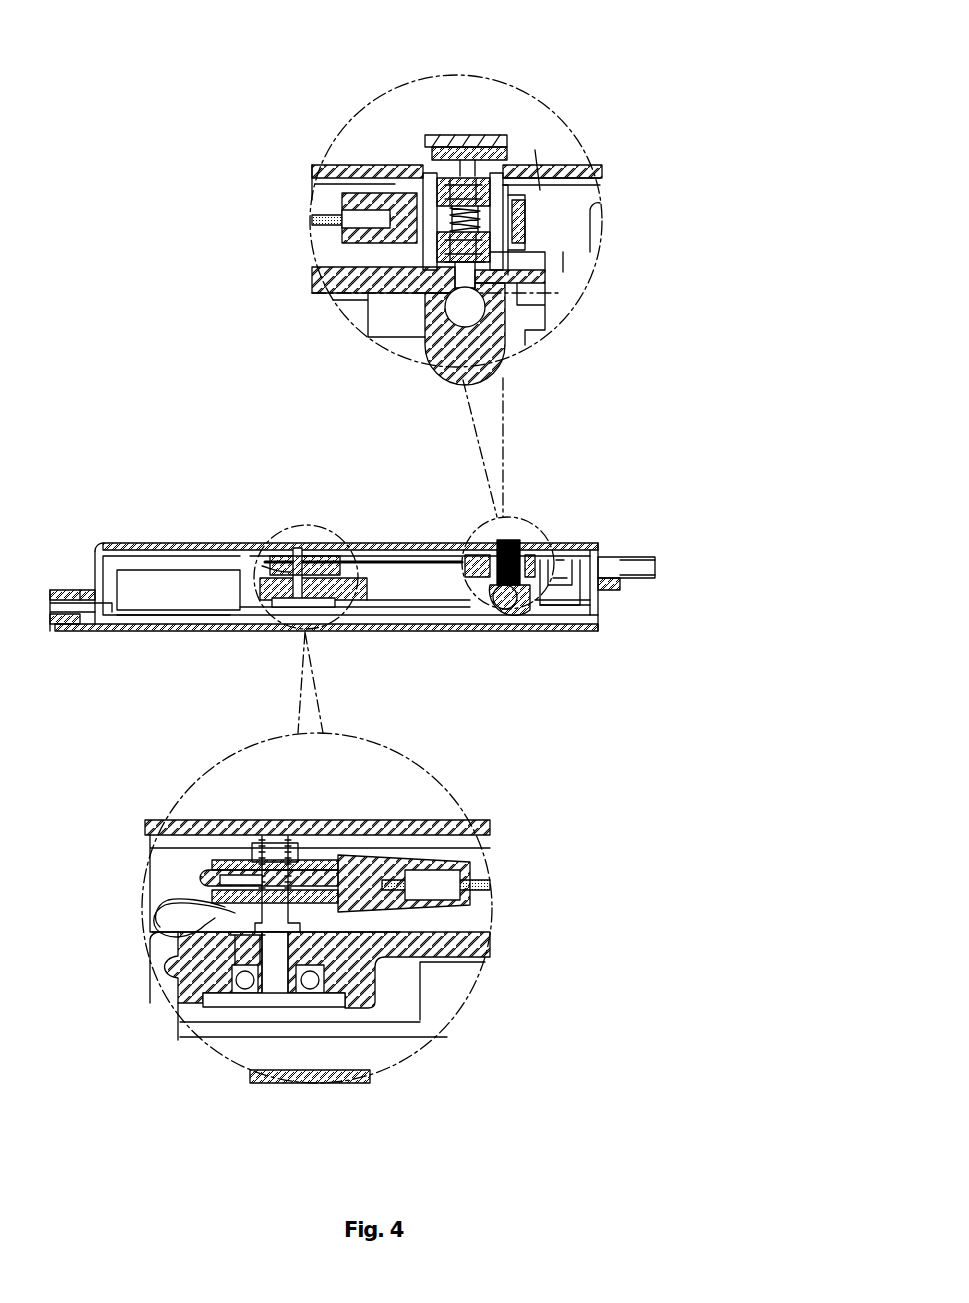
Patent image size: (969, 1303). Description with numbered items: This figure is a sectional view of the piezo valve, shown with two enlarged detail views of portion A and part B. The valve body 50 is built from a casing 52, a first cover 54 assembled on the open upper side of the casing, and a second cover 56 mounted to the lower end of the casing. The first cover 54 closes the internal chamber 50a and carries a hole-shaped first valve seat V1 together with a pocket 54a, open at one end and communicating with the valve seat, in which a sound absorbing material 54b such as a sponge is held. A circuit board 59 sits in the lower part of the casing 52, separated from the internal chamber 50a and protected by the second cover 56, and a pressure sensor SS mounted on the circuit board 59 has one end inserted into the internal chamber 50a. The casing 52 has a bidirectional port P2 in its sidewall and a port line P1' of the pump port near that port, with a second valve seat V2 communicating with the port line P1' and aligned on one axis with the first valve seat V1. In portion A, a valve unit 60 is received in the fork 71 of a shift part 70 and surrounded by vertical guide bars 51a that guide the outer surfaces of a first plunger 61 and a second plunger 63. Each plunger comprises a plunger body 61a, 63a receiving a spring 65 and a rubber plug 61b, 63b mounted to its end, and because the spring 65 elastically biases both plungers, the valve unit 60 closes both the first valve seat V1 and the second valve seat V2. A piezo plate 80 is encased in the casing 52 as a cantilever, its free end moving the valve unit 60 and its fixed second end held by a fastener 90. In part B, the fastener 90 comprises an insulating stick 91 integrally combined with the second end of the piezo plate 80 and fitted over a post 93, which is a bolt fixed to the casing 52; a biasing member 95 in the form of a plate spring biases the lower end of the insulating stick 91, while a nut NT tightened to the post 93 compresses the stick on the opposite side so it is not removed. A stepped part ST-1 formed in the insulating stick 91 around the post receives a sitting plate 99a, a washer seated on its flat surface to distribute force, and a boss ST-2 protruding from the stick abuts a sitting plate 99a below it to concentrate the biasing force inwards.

The valve body 50 is at (215, 418).
The internal chamber 50a is at (418, 626).
The casing 52 is at (348, 280).
The first cover 54 is at (352, 168).
The pocket 54a is at (451, 136).
The sound absorbing material 54b is at (496, 147).
The guide bar 51a is at (440, 176).
The second cover 56 is at (142, 546).
The circuit board 59 is at (206, 624).
The valve unit 60 is at (718, 302).
The first plunger 61 is at (680, 193).
The plunger body 61a is at (527, 199).
The rubber plug 61b is at (540, 190).
The second plunger 63 is at (668, 290).
The plunger body 63a is at (522, 262).
The rubber plug 63b is at (505, 276).
The spring 65 is at (492, 222).
The shift part 70 is at (466, 556).
The fork 71 is at (402, 242).
The piezo plate 80 is at (312, 220).
The fastener 90 is at (330, 546).
The insulating stick 91 is at (400, 888).
The post 93 is at (318, 878).
The biasing member 95 is at (176, 940).
The sitting plate 99a is at (262, 866).
The nut NT is at (272, 846).
The stepped part ST-1 is at (212, 920).
The boss ST-2 is at (242, 972).
The first valve seat V1 is at (536, 150).
The second valve seat V2 is at (432, 296).
The port line P1' is at (431, 484).
The bidirectional port P2 is at (626, 556).
The pressure sensor SS is at (562, 626).
The portion A is at (392, 92).
The part B is at (358, 630).